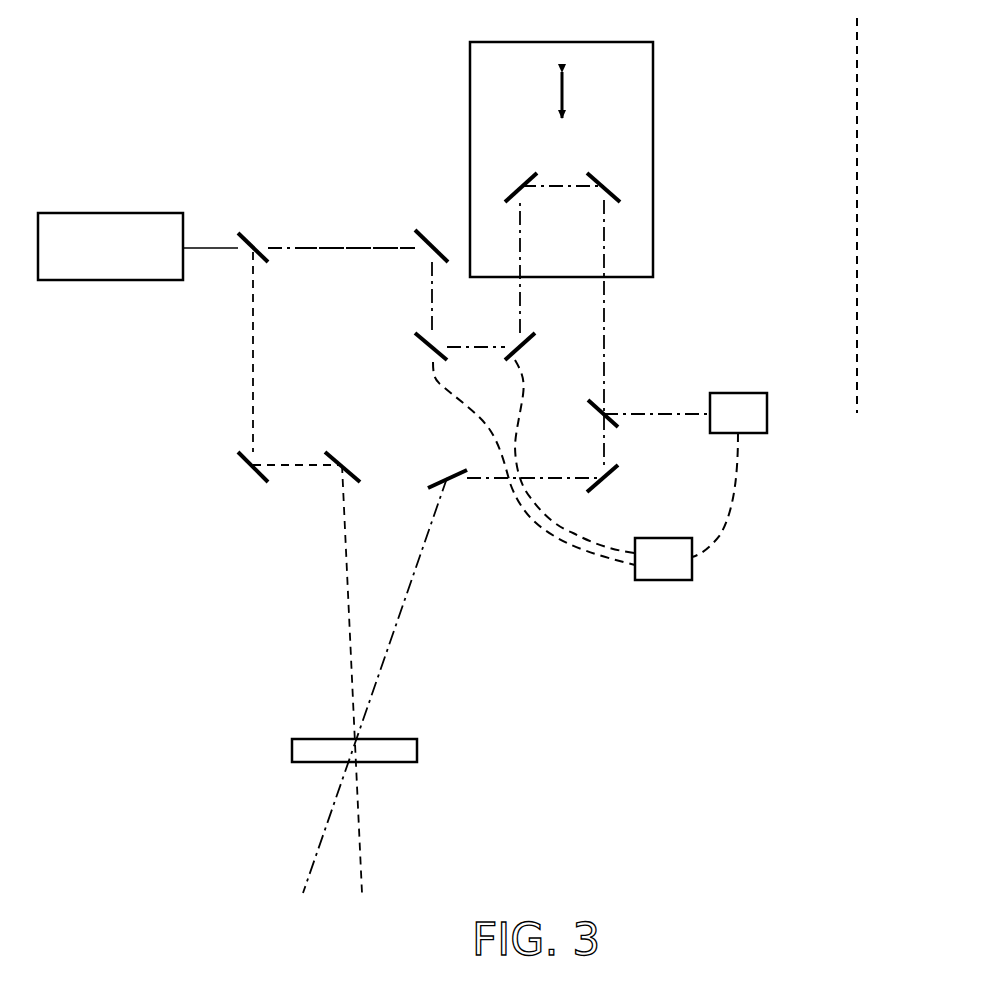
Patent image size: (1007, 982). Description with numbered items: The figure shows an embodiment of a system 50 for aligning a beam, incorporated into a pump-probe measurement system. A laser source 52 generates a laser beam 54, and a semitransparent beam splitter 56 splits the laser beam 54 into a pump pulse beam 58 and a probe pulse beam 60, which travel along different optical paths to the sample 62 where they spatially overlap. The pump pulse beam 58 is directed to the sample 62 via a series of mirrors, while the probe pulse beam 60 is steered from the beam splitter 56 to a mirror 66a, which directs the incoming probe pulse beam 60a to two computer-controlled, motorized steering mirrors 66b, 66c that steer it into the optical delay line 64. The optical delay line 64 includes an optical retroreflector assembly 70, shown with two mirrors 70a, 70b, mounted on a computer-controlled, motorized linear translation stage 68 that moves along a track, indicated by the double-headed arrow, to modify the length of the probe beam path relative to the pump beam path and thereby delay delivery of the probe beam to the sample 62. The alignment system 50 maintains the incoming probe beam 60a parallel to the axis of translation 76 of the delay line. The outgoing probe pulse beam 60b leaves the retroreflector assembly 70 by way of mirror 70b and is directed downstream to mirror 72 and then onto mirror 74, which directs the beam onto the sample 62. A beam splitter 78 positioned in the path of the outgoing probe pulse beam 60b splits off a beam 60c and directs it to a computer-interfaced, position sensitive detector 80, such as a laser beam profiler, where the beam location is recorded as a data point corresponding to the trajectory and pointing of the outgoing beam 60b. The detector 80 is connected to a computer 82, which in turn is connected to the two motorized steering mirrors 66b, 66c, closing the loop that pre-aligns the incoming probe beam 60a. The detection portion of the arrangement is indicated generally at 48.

The detection system 48 is at (732, 588).
The system for aligning a beam 50 is at (138, 121).
The laser source 52 is at (112, 213).
The laser beam 54 is at (218, 248).
The semitransparent beam splitter 56 is at (251, 237).
The pump pulse beam 58 is at (350, 677).
The probe pulse beam 60 is at (316, 249).
The incoming probe pulse beam 60a is at (340, 247).
The outgoing probe pulse beam 60b is at (603, 333).
The beam 60c is at (656, 412).
The sample 62 is at (292, 745).
The optical delay line 64 is at (686, 250).
The mirror 66a is at (424, 234).
The motorized steering mirror 66b is at (418, 338).
The motorized steering mirror 66c is at (538, 338).
The motorized linear translation stage 68 is at (655, 158).
The optical retroreflector assembly 70 is at (510, 146).
The mirror 70a is at (530, 178).
The mirror 70b is at (594, 177).
The mirror 72 is at (598, 488).
The mirror 74 is at (434, 482).
The axis of translation 76 is at (857, 210).
The beam splitter 78 is at (590, 406).
The position sensitive detector 80 is at (767, 408).
The computer 82 is at (658, 538).